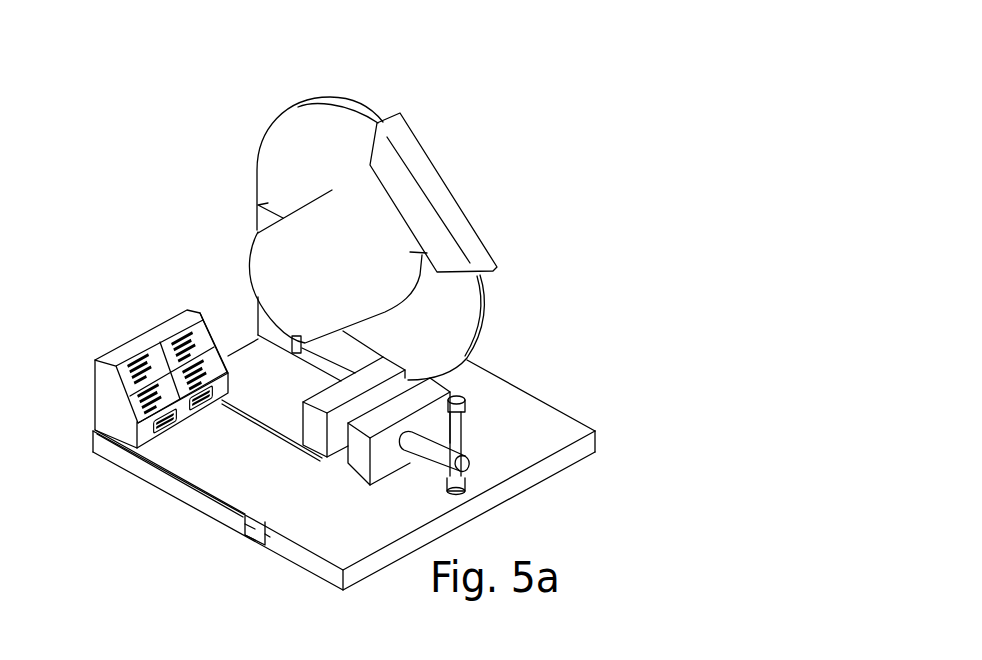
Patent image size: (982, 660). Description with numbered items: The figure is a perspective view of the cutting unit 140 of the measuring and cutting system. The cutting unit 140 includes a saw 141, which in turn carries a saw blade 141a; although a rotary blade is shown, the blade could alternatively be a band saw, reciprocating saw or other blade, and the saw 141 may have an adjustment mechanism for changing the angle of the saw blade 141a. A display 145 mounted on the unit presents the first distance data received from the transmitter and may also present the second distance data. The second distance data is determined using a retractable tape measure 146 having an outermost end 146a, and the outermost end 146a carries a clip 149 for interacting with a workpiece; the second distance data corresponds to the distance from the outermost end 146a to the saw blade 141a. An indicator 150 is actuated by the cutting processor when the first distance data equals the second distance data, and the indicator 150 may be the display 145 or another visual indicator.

The cutting unit 140 is at (622, 92).
The saw 141 is at (450, 150).
The saw blade 141a is at (485, 322).
The display 145 is at (150, 353).
The indicator 150 is at (142, 433).
The clip 149 is at (243, 522).
The retractable tape measure 146 is at (255, 537).
The outermost end 146a is at (270, 535).